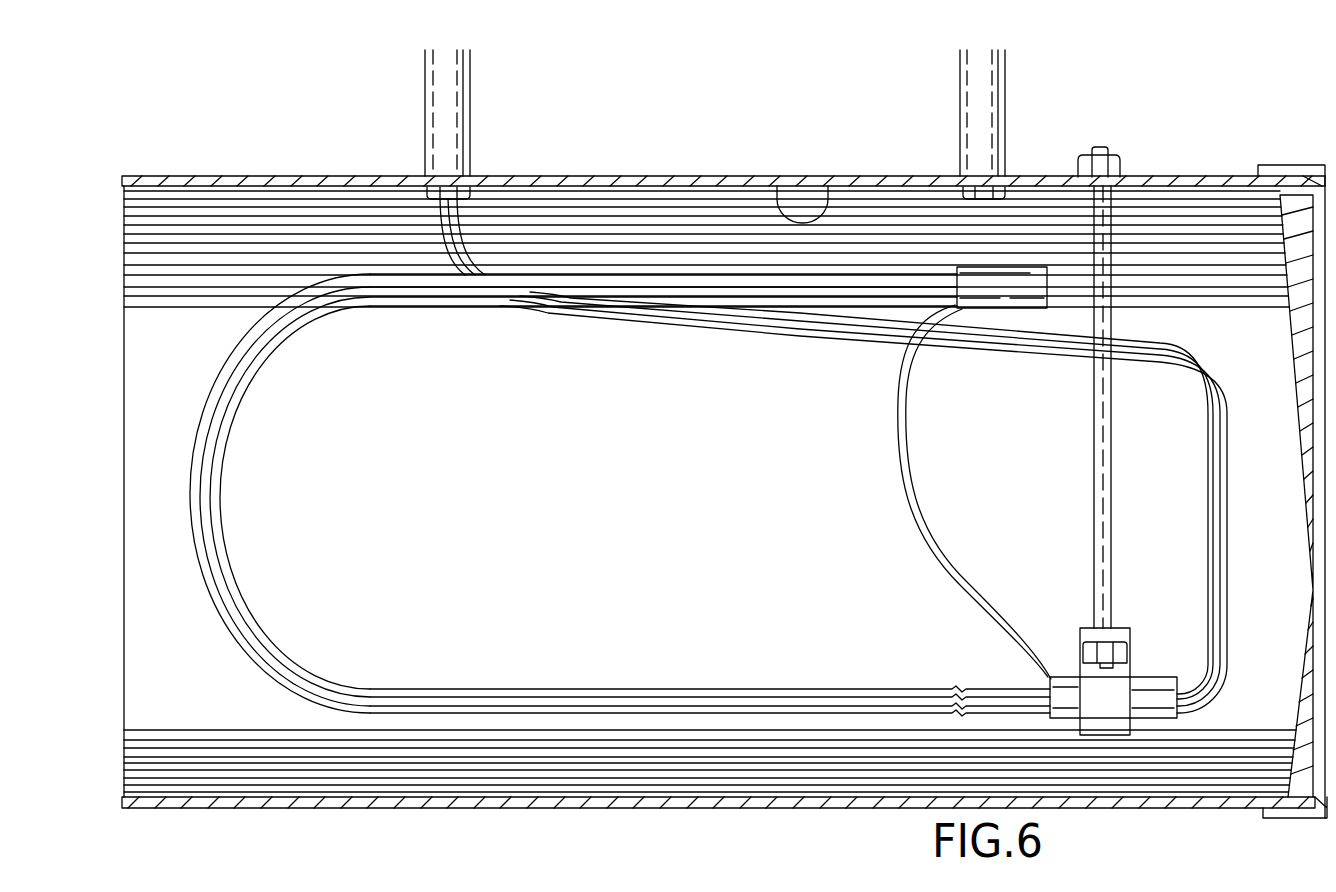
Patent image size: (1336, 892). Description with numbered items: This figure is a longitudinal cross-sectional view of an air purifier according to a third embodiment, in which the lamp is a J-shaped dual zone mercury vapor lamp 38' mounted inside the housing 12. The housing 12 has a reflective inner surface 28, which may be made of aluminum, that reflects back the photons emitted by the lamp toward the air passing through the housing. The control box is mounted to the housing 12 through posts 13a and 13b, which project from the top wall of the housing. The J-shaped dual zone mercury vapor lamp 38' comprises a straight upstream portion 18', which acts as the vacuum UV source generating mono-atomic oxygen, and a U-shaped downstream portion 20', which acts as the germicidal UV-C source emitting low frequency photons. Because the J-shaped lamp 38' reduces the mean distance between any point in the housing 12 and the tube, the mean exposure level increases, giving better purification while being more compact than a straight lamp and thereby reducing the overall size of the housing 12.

The housing 12 is at (648, 183).
The post 13a is at (448, 98).
The post 13b is at (992, 95).
The reflective inner surface 28 is at (827, 186).
The U-shaped downstream portion 20' is at (798, 456).
The J-shaped dual zone mercury vapor lamp 38' is at (620, 495).
The straight upstream portion 18' is at (1037, 520).